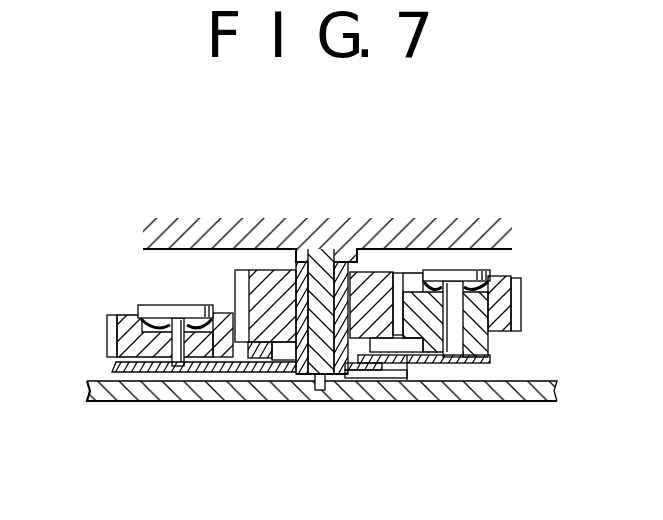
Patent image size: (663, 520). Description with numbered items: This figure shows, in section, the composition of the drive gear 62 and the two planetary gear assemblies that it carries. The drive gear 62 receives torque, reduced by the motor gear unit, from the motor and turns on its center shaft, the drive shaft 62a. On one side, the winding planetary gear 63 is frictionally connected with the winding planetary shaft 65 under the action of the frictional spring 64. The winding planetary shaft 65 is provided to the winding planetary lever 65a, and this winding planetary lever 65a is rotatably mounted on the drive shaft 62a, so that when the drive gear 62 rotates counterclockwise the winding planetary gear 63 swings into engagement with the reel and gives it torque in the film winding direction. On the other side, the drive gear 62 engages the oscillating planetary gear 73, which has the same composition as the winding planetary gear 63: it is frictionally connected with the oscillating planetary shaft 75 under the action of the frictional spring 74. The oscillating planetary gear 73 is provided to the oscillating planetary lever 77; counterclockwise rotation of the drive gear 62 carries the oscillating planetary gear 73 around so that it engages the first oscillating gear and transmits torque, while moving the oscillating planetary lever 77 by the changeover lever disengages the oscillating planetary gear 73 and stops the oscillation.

The drive gear 62 is at (258, 277).
The drive shaft 62a is at (304, 262).
The winding planetary gear 63 is at (500, 278).
The frictional spring 64 is at (432, 264).
The winding planetary shaft 65 is at (456, 262).
The winding planetary lever 65a is at (407, 365).
The oscillating planetary gear 73 is at (107, 330).
The frictional spring 74 is at (212, 325).
The oscillating planetary shaft 75 is at (155, 306).
The oscillating planetary lever 77 is at (112, 368).